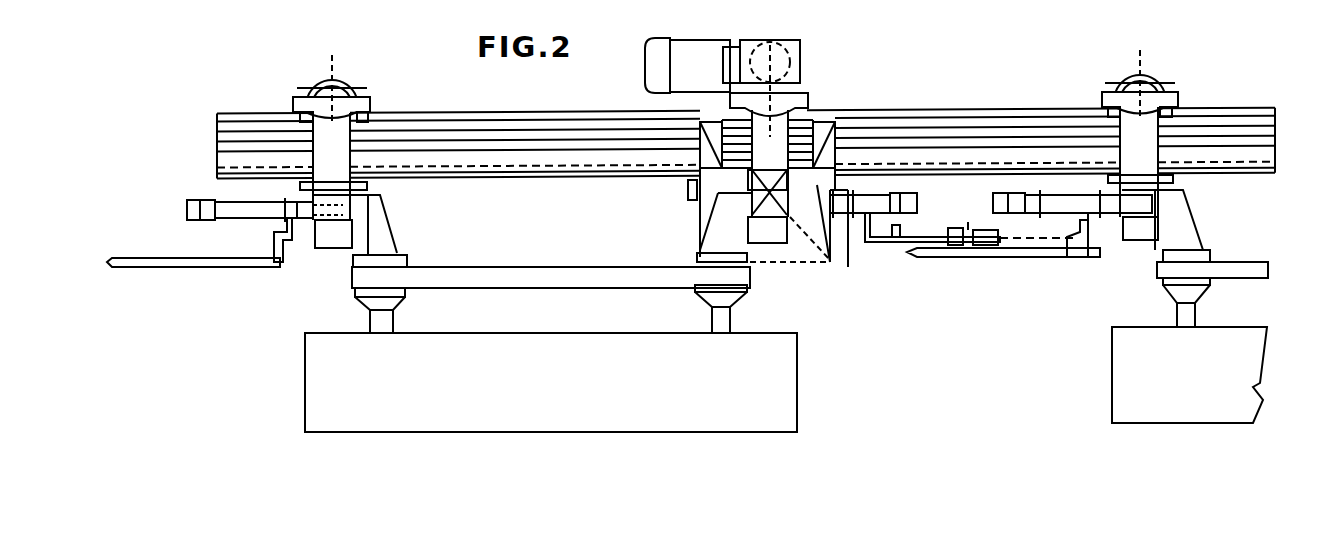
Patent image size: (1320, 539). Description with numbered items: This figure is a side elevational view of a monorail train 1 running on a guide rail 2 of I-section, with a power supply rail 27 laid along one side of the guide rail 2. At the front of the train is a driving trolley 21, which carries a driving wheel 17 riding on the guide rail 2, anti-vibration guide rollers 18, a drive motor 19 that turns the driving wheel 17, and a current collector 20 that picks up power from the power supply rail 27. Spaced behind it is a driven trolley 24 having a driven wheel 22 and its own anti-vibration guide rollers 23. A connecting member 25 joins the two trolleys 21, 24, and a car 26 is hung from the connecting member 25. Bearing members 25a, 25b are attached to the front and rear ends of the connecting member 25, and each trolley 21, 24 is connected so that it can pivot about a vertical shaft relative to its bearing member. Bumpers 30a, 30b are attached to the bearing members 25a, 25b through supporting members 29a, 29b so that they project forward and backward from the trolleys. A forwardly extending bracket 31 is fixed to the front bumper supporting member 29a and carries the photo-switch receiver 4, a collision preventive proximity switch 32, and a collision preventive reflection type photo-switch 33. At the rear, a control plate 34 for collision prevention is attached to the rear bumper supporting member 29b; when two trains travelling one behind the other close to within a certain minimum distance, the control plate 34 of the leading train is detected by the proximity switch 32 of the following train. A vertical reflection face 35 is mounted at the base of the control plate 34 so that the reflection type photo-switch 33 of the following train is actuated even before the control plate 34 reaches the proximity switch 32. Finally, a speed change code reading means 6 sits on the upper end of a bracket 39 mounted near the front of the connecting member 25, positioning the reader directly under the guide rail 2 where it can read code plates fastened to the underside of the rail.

The monorail train 1 is at (760, 300).
The guide rail 2 is at (1058, 76).
The photo-switch receiver 4 is at (895, 237).
The speed change code reading means 6 is at (688, 192).
The driving wheel 17 is at (795, 60).
The anti-vibration guide rollers 18 is at (808, 108).
The drive motor 19 is at (695, 55).
The current collector 20 is at (746, 122).
The driving trolley 21 is at (760, 65).
The driven wheel 22 is at (348, 62).
The anti-vibration guide rollers 23 is at (370, 108).
The driven trolley 24 is at (323, 143).
The connecting member 25 is at (540, 267).
The bearing member 25a is at (717, 217).
The bearing member 25b is at (380, 230).
The car 26 is at (558, 380).
The power supply rail 27 is at (985, 120).
The front bumper supporting member 29a is at (838, 215).
The rear bumper supporting member 29b is at (252, 213).
The front bumper 30a is at (913, 193).
The rear bumper 30b is at (197, 197).
The bracket 31 is at (920, 242).
The collision preventive proximity switch 32 is at (952, 245).
The collision preventive reflection type photo-switch 33 is at (1003, 250).
The control plate 34 is at (140, 256).
The vertical reflection face 35 is at (265, 258).
The bracket 39 is at (697, 238).